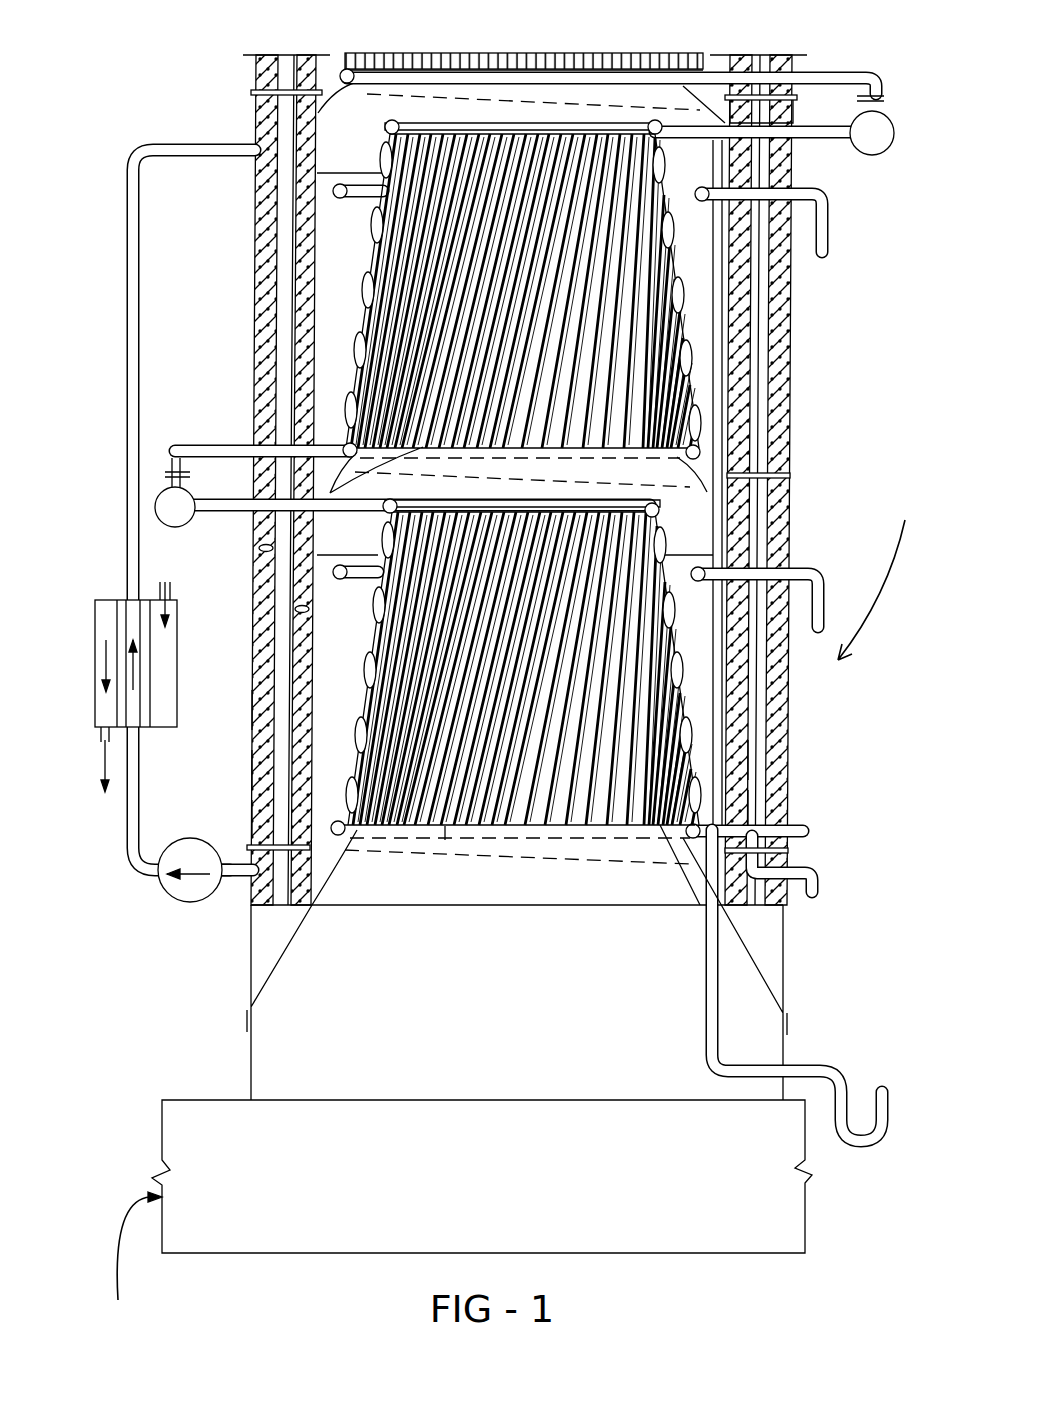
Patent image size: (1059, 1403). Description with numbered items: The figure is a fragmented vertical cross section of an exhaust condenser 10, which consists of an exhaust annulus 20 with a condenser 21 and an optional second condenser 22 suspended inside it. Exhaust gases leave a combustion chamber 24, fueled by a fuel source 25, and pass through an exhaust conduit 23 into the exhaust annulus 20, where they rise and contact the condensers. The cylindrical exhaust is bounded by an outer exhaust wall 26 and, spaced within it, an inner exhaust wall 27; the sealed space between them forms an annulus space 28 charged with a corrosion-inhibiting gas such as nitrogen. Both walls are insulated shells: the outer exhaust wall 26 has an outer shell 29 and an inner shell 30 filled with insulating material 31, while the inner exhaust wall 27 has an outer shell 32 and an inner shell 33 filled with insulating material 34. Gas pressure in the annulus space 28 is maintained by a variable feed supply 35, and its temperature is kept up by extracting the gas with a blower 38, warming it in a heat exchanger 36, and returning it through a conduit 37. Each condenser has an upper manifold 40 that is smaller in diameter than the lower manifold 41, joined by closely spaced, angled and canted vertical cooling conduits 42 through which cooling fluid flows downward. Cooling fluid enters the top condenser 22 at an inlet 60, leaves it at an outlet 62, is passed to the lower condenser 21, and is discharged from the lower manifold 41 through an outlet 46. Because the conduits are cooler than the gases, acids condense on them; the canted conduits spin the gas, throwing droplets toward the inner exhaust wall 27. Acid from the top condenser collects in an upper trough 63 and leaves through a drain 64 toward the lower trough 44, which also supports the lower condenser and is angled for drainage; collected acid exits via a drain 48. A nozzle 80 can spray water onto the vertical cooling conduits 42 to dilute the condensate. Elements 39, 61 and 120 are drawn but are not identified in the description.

The exhaust condenser 10 is at (885, 559).
The exhaust annulus 20 is at (517, 886).
The condenser 21 is at (400, 826).
The second condenser 22 is at (497, 273).
The exhaust conduit 23 is at (517, 1002).
The combustion chamber 24 is at (482, 1176).
The fuel source 25 is at (155, 1260).
The outer exhaust wall 26 is at (259, 548).
The inner exhaust wall 27 is at (295, 609).
The annulus space 28 is at (285, 666).
The outer shell 29 is at (256, 710).
The inner shell 30 is at (256, 768).
The insulating material 31 is at (258, 815).
The outer shell 32 is at (750, 712).
The inner shell 33 is at (740, 760).
The insulating material 34 is at (742, 806).
The variable feed supply 35 is at (807, 893).
The heat exchanger 36 is at (112, 592).
The conduit 37 is at (142, 290).
The blower 38 is at (172, 897).
The distributor plate 39 is at (533, 62).
The upper manifold 40 is at (637, 496).
The lower manifold 41 is at (630, 836).
The vertical cooling conduits 42 is at (447, 826).
The trough 44 is at (680, 843).
The outlet 46 is at (808, 832).
The drain 48 is at (707, 1013).
The inlet 60 is at (818, 138).
The valve 61 is at (323, 497).
The outlet 62 is at (235, 446).
The upper trough 63 is at (560, 487).
The drain 64 is at (717, 597).
The nozzle 80 is at (360, 198).
The outlet pipe 120 is at (822, 590).